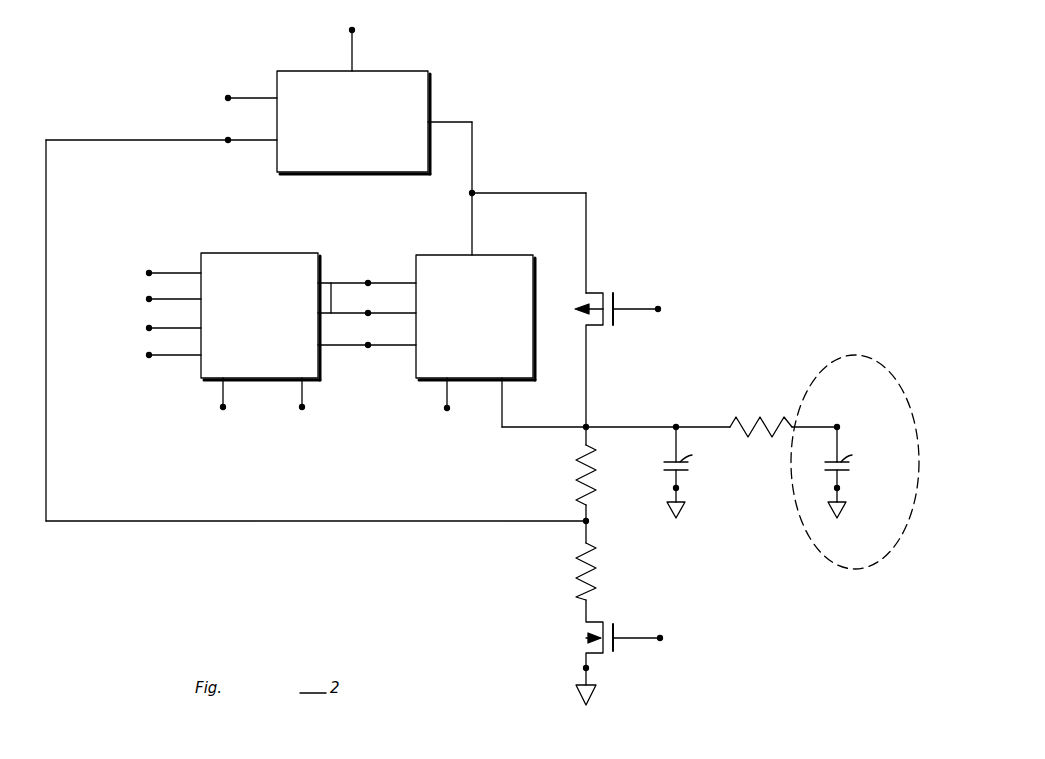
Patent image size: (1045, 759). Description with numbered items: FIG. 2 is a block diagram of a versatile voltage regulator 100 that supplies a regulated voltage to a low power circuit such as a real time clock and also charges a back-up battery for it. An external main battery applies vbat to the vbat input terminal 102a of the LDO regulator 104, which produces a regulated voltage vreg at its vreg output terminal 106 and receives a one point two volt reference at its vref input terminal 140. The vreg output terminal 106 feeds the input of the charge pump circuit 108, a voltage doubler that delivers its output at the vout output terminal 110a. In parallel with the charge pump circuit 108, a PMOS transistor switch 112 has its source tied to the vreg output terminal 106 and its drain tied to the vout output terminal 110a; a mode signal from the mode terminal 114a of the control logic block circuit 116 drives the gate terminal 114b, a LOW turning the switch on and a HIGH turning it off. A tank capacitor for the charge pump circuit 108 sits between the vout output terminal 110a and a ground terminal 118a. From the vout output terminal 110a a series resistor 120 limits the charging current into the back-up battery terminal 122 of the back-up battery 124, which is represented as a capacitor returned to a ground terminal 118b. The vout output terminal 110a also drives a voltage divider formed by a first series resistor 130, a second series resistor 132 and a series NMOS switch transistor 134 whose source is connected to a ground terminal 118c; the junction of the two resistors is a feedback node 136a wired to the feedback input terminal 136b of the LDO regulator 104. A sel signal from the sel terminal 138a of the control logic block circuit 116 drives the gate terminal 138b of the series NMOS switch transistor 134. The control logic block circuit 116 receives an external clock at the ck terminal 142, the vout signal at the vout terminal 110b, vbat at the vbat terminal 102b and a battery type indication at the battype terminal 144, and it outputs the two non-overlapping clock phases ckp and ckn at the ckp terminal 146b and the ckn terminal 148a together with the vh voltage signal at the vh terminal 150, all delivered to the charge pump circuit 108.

The versatile voltage regulator 100 is at (696, 111).
The vbat input terminal 102a is at (355, 32).
The vbat terminal 102b is at (147, 327).
The LDO regulator 104 is at (432, 78).
The vreg output terminal 106 is at (470, 193).
The charge pump circuit 108 is at (503, 255).
The vout output terminal 110a is at (584, 425).
The vout terminal 110b is at (147, 298).
The PMOS transistor switch 112 is at (594, 294).
The mode terminal 114a is at (221, 409).
The gate terminal 114b is at (445, 410).
The control logic block circuit 116 is at (293, 253).
The ground terminal 118a is at (679, 490).
The ground terminal 118b is at (840, 490).
The ground terminal 118c is at (583, 668).
The series resistor 120 is at (752, 416).
The back-up battery terminal 122 is at (840, 426).
The back-up battery 124 is at (889, 373).
The first series resistor 130 is at (578, 478).
The second series resistor 132 is at (578, 576).
The series NMOS switch transistor 134 is at (596, 622).
The feedback node 136a is at (590, 523).
The feedback input terminal 136b is at (227, 143).
The sel terminal 138a is at (304, 409).
The gate terminal 138b is at (662, 636).
The vref input terminal 140 is at (230, 96).
The ck terminal 142 is at (152, 271).
The battype terminal 144 is at (150, 358).
The ckp terminal 146b is at (370, 281).
The ckn terminal 148a is at (392, 303).
The vh terminal 150 is at (368, 348).